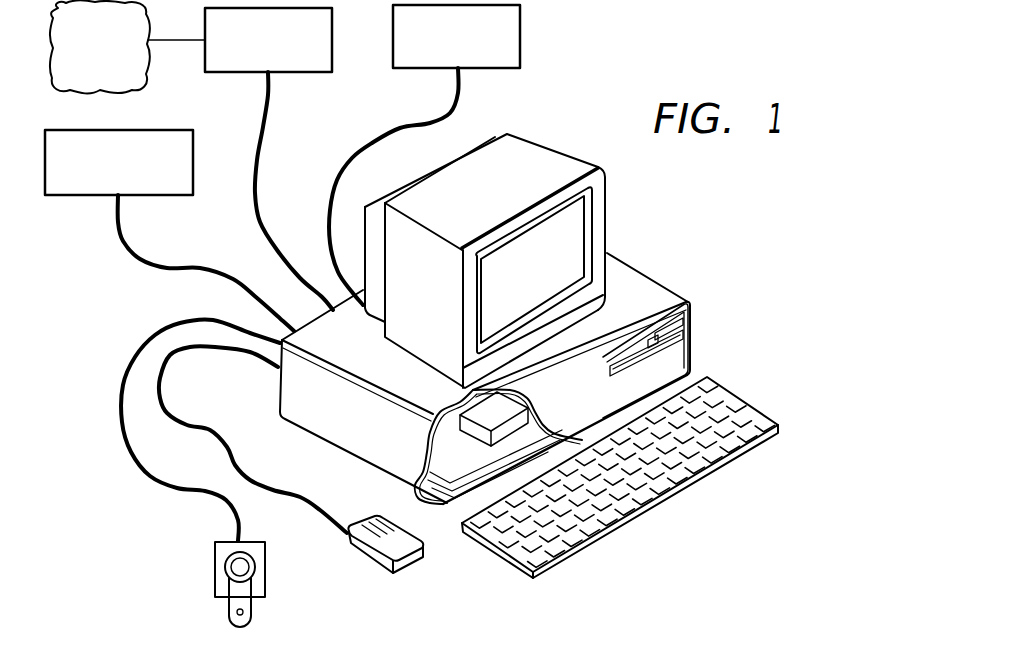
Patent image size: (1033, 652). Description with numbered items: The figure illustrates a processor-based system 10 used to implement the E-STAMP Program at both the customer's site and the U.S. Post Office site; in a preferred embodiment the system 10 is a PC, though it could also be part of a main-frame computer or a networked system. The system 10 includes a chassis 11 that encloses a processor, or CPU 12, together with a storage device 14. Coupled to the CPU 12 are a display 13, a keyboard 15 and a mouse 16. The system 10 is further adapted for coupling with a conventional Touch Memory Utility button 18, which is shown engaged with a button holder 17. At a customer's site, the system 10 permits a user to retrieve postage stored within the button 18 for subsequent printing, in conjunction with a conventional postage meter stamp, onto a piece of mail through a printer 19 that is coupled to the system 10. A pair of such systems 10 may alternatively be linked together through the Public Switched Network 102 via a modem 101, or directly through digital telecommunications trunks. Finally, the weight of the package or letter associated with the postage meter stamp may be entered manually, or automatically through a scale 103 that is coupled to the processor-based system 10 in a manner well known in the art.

The processor-based system 10 is at (662, 215).
The chassis 11 is at (647, 283).
The processor (CPU) 12 is at (484, 439).
The display 13 is at (545, 153).
The storage device 14 is at (680, 321).
The keyboard 15 is at (742, 409).
The mouse 16 is at (401, 543).
The button holder 17 is at (268, 572).
The Touch Memory Utility (TMU) button 18 is at (228, 608).
The printer 19 is at (73, 195).
The modem 101 is at (232, 73).
The Public Switched Network (PSN) 102 is at (121, 67).
The scale 103 is at (520, 30).